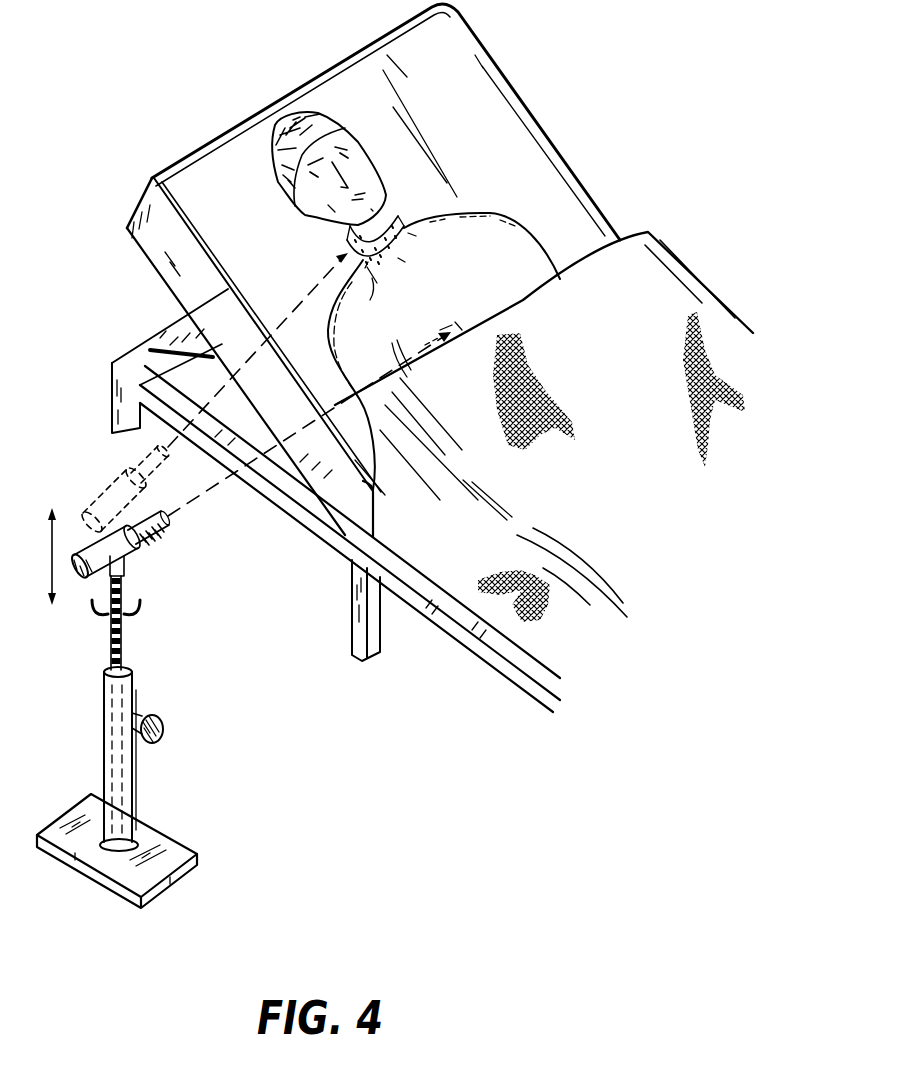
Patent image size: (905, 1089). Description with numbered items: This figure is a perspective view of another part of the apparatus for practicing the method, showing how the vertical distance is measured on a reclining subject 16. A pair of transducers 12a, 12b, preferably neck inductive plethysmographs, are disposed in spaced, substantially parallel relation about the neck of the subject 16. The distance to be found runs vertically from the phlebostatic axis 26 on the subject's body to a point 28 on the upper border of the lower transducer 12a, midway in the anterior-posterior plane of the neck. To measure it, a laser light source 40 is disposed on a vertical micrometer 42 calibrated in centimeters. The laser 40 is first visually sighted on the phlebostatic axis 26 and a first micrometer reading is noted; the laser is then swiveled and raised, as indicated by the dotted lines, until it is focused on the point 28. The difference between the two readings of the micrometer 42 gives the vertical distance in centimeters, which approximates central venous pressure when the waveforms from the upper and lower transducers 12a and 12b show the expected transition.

The lower transducer 12a is at (373, 181).
The upper transducer 12b is at (397, 222).
The subject 16 is at (302, 186).
The phlebostatic axis 26 is at (472, 321).
The point on the upper border of the lower transducer 28 is at (340, 242).
The laser light source 40 is at (138, 551).
The vertical micrometer 42 is at (112, 653).